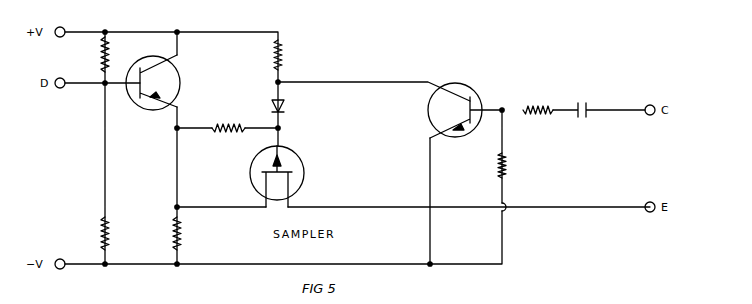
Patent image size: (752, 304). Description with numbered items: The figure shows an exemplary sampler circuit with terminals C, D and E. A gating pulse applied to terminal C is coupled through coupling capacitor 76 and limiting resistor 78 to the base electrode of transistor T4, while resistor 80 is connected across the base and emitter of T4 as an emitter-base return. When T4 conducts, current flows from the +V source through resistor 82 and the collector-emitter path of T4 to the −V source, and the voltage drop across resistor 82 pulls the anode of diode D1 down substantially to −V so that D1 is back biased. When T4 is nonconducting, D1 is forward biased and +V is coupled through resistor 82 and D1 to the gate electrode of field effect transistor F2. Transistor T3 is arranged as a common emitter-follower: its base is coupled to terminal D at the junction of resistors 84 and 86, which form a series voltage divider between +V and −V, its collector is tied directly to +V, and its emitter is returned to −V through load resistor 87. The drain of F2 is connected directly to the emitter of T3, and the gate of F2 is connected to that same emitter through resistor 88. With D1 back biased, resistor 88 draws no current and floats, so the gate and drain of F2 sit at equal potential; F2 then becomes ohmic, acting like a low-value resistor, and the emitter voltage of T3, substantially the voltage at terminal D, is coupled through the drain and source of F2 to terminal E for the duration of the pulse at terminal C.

The resistor 84 is at (109, 58).
The resistor 86 is at (101, 238).
The load resistor 87 is at (182, 240).
The resistor 82 is at (282, 58).
The resistor 88 is at (213, 126).
The limiting resistor 78 is at (533, 105).
The resistor 80 is at (507, 172).
The coupling capacitor 76 is at (581, 101).
The transistor T3 is at (181, 80).
The transistor T4 is at (461, 85).
The field effect transistor F2 is at (300, 186).
The diode D1 is at (284, 104).